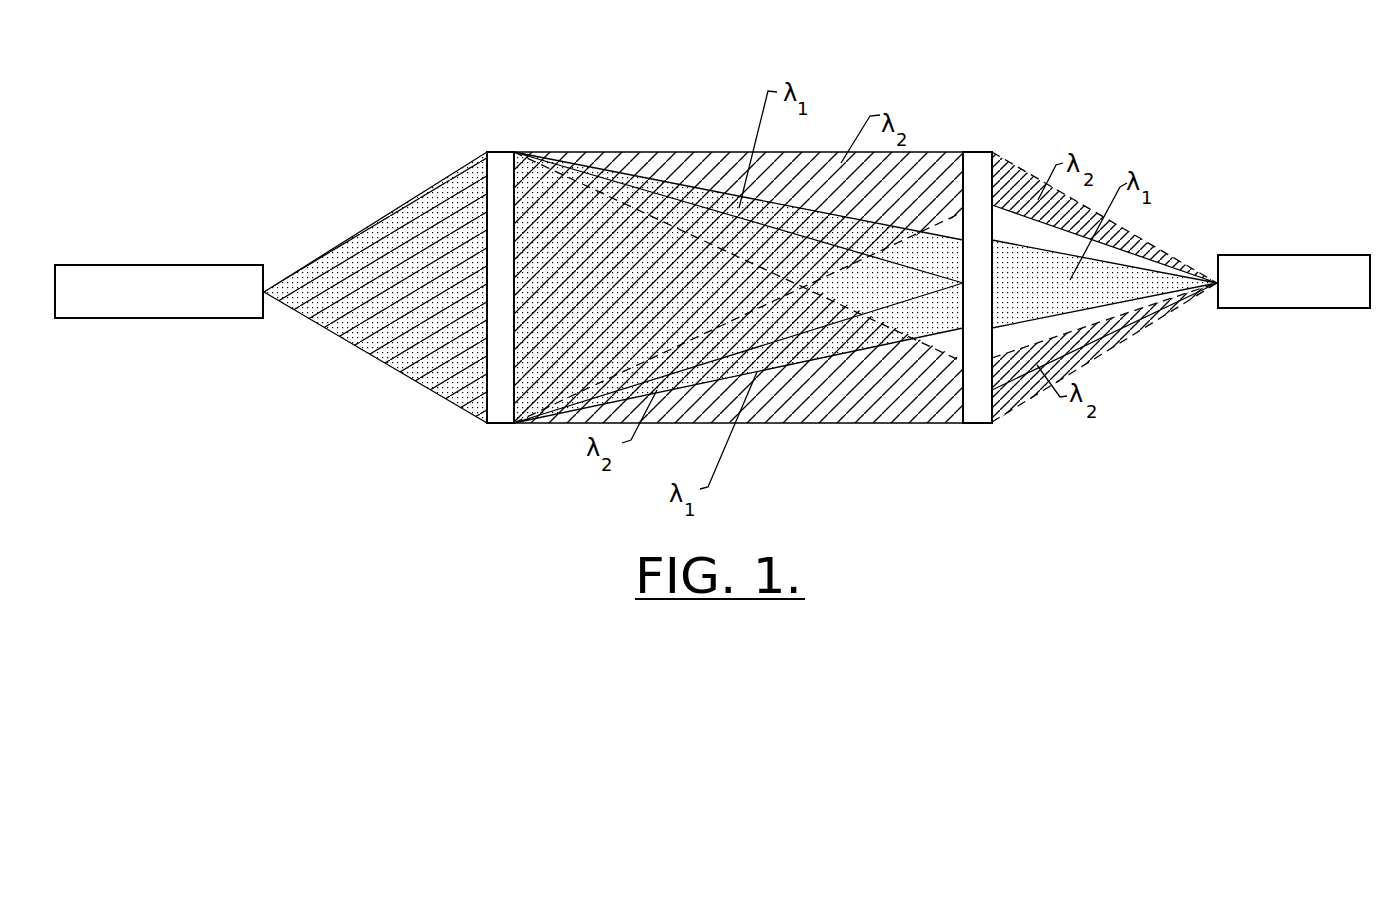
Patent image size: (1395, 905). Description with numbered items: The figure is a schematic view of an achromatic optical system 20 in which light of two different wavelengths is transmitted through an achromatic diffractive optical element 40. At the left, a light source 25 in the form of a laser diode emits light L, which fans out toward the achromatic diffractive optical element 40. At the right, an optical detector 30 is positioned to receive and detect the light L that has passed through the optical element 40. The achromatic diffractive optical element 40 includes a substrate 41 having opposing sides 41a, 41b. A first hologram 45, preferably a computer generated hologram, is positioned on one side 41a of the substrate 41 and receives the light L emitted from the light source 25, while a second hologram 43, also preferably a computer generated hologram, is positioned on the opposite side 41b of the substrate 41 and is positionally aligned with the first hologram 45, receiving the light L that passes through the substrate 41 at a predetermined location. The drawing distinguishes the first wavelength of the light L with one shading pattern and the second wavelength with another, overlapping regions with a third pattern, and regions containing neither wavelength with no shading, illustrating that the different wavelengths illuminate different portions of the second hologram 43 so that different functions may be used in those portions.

The achromatic optical system 20 is at (1140, 476).
The light source 25 is at (190, 330).
The optical detector 30 is at (1318, 308).
The achromatic diffractive optical element 40 is at (874, 444).
The substrate 41 is at (720, 380).
The one side of the substrate 41a is at (958, 152).
The opposite side of the substrate 41b is at (518, 207).
The second hologram 43 is at (985, 425).
The first hologram 45 is at (502, 425).
The light L is at (353, 345).